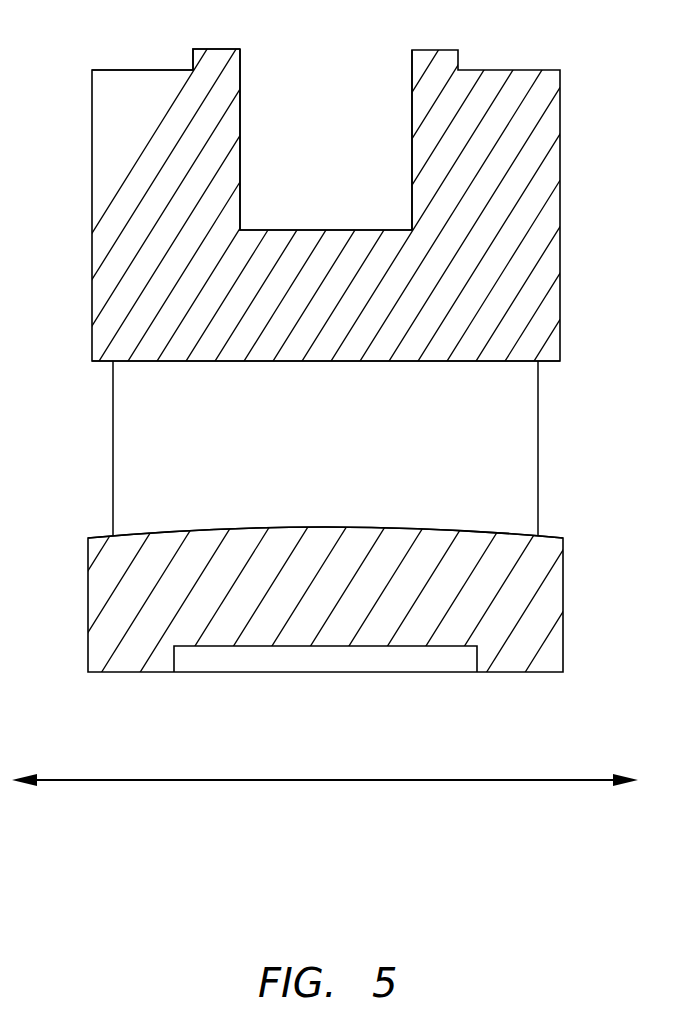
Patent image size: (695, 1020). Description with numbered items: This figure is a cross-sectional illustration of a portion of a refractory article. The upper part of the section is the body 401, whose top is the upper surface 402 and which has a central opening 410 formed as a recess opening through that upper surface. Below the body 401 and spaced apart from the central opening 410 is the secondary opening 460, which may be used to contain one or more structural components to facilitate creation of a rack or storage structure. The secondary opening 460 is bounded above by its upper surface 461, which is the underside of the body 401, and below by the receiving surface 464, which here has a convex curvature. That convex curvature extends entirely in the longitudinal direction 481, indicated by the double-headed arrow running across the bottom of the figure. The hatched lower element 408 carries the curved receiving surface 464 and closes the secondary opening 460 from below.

The body 401 is at (560, 70).
The upper surface 402 is at (140, 66).
The central opening 410 is at (317, 70).
The upper surface 461 is at (133, 362).
The secondary opening 460 is at (508, 458).
The receiving surface 464 is at (138, 533).
The lens element 408 is at (540, 672).
The longitudinal direction 481 is at (398, 780).